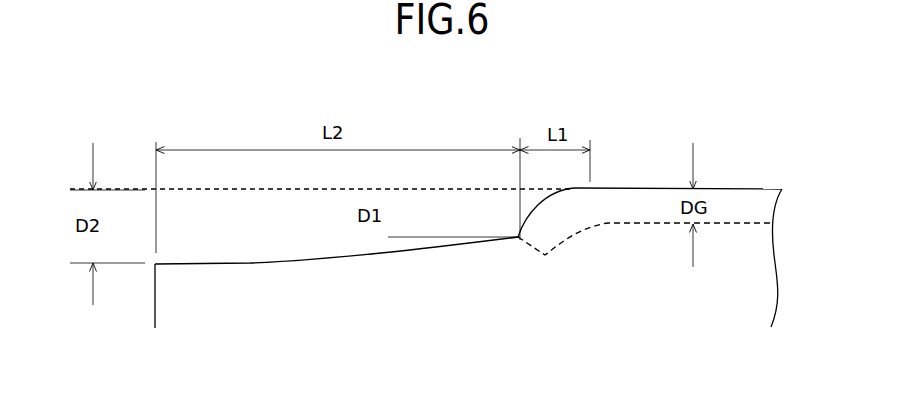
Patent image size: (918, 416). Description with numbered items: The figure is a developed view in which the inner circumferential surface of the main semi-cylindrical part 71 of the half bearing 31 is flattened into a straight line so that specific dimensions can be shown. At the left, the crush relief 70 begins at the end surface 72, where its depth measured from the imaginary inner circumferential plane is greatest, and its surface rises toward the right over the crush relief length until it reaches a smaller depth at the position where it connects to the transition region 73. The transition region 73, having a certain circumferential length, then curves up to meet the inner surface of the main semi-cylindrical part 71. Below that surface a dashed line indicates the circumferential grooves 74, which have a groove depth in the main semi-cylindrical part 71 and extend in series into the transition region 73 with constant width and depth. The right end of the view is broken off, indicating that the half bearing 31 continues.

The crush relief 70 is at (363, 130).
The main semi-cylindrical part 71 is at (728, 187).
The end surface 72 is at (155, 300).
The transition region 73 is at (548, 188).
The circumferential grooves 74 is at (610, 214).
The half bearing 31 is at (765, 255).